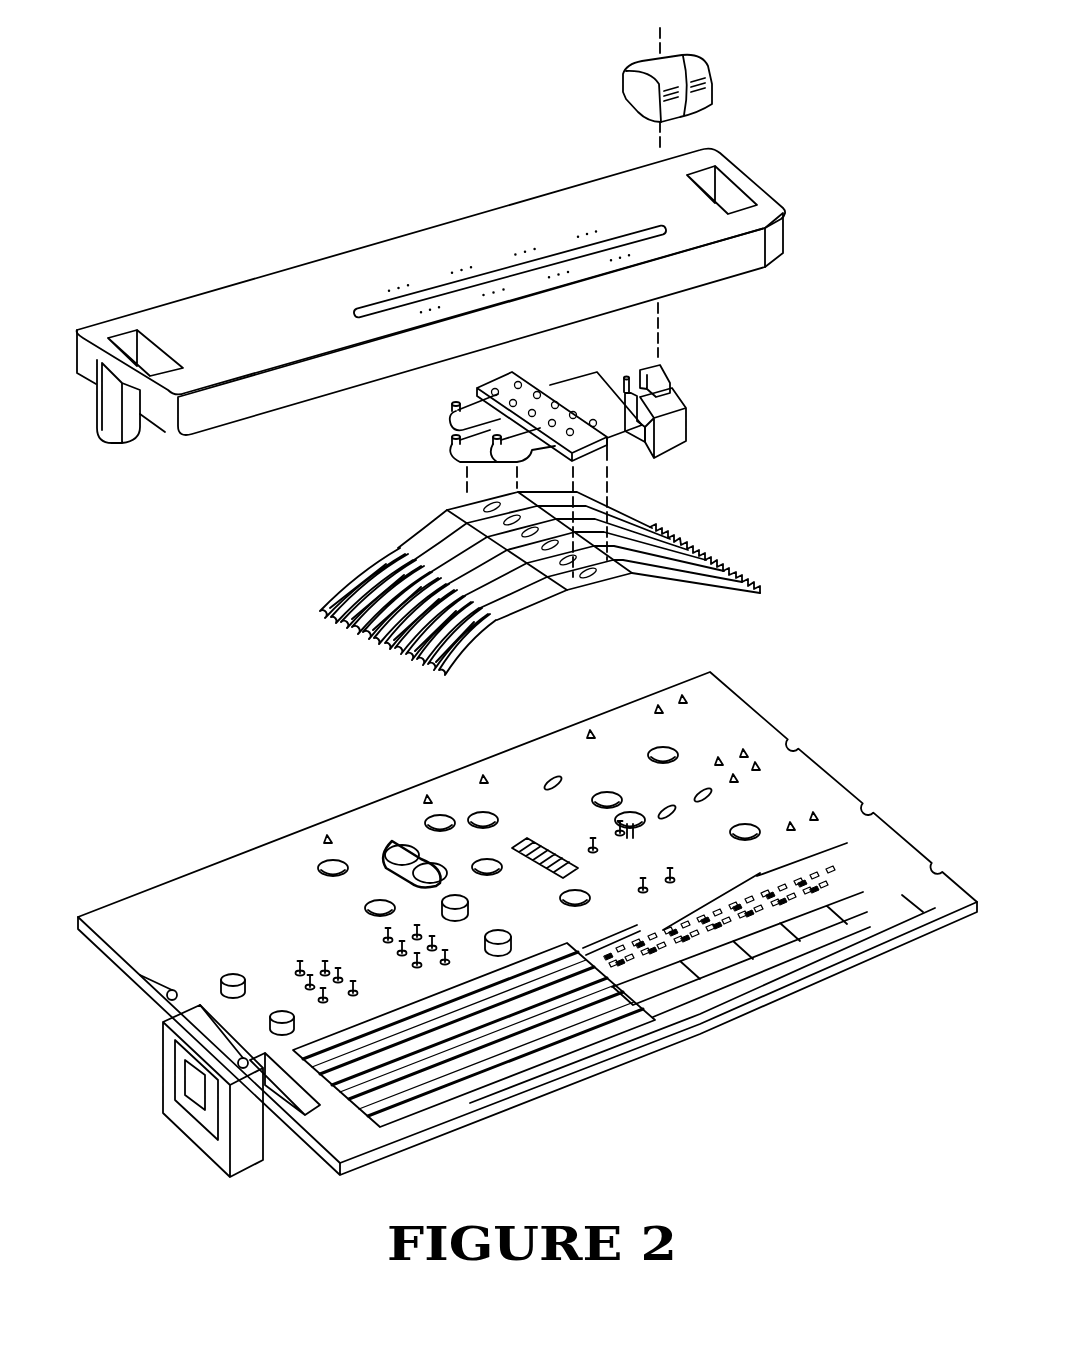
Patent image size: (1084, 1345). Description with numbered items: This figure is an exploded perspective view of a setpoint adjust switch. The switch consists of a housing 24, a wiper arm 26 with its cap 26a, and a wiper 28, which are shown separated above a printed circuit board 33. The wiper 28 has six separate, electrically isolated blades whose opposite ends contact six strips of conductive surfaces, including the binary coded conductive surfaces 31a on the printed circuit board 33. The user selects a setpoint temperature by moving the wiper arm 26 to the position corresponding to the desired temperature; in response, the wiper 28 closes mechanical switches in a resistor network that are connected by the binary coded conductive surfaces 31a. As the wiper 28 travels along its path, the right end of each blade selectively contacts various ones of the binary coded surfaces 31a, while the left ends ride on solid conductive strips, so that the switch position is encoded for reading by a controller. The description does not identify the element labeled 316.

The housing 24 is at (787, 233).
The wiper arm 26 is at (687, 424).
The cap 26a is at (703, 67).
The wiper 28 is at (698, 557).
The printed circuit board 33 is at (838, 778).
The binary coded conductive surfaces 31a is at (848, 953).
The conductive traces 316 is at (545, 1067).